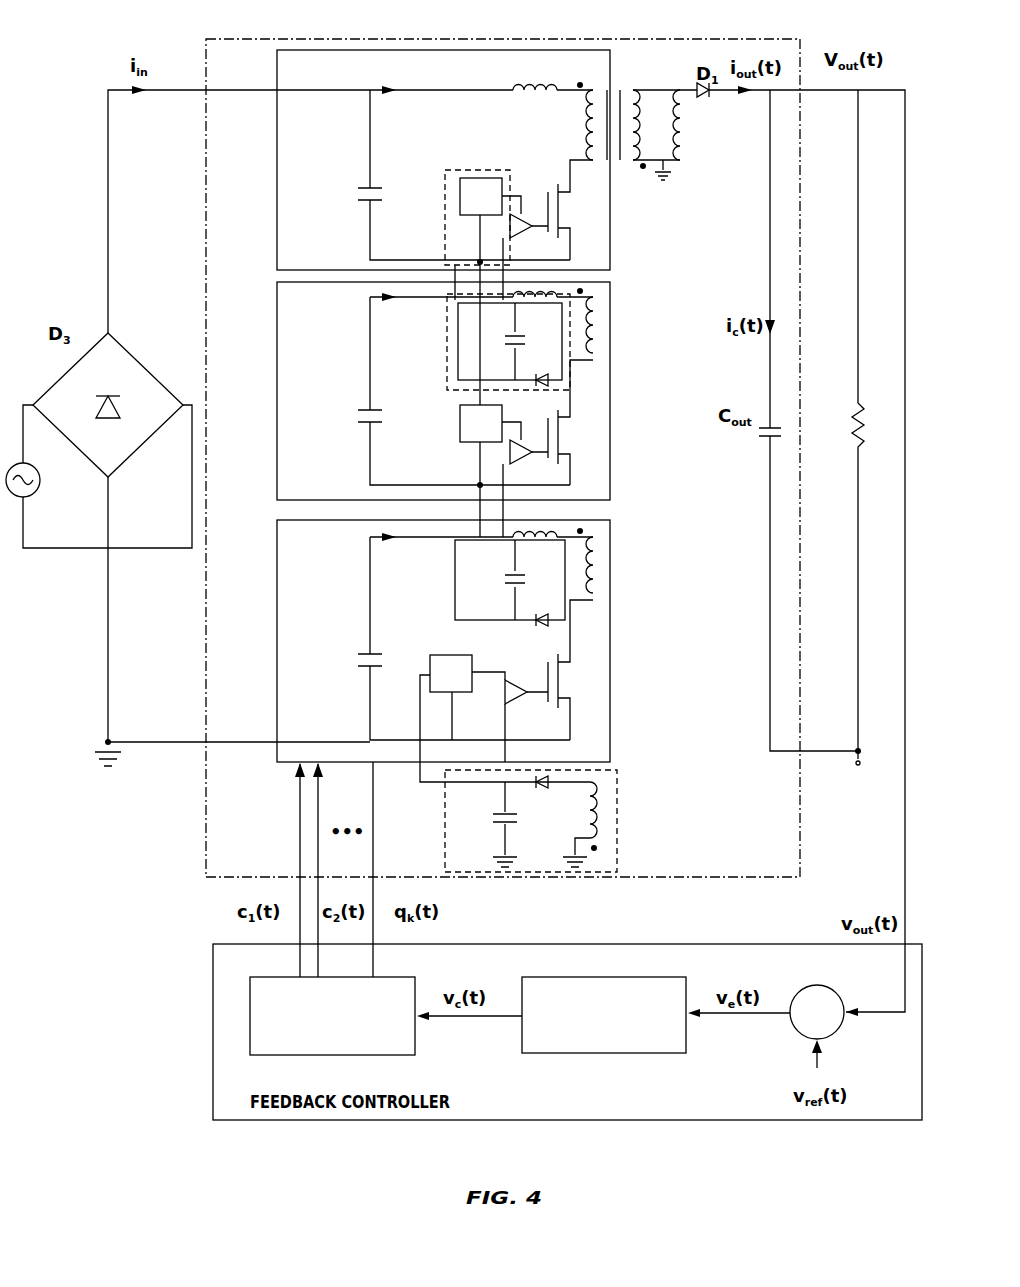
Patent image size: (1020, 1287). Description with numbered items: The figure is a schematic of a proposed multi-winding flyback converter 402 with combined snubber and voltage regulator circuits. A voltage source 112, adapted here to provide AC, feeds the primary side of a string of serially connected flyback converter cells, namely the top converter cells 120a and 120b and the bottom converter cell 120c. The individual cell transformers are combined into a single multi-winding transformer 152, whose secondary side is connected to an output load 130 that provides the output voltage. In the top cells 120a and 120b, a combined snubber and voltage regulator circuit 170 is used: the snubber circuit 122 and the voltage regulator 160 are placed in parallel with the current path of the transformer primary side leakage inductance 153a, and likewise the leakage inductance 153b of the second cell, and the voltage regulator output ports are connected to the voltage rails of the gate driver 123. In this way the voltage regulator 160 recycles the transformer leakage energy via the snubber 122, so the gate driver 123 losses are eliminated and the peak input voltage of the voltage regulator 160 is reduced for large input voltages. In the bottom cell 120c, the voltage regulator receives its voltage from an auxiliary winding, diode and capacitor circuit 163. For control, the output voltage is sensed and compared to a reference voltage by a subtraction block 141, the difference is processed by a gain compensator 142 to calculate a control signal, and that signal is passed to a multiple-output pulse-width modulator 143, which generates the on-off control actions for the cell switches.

The multi-winding flyback converter 402 is at (285, 36).
The top converter cell 120a is at (417, 203).
The converter cell 120b is at (455, 397).
The bottom converter cell 120c is at (616, 633).
The transformer primary side leakage inductance 153a is at (554, 111).
The transformer primary side leakage inductance 153b is at (632, 320).
The multi-winding transformer 152 is at (671, 172).
The voltage regulator 160 is at (467, 176).
The combined snubber and voltage regulator circuit 170 is at (442, 252).
The snubber circuit 122 is at (494, 370).
The gate driver 123 is at (507, 472).
The output load 130 is at (866, 400).
The auxiliary winding, diode and capacitor circuit 163 is at (616, 872).
The voltage source 112 is at (42, 480).
The subtraction block 141 is at (824, 1024).
The gain compensator 142 is at (604, 1015).
The multiple-output pulse-width modulator 143 is at (332, 1016).